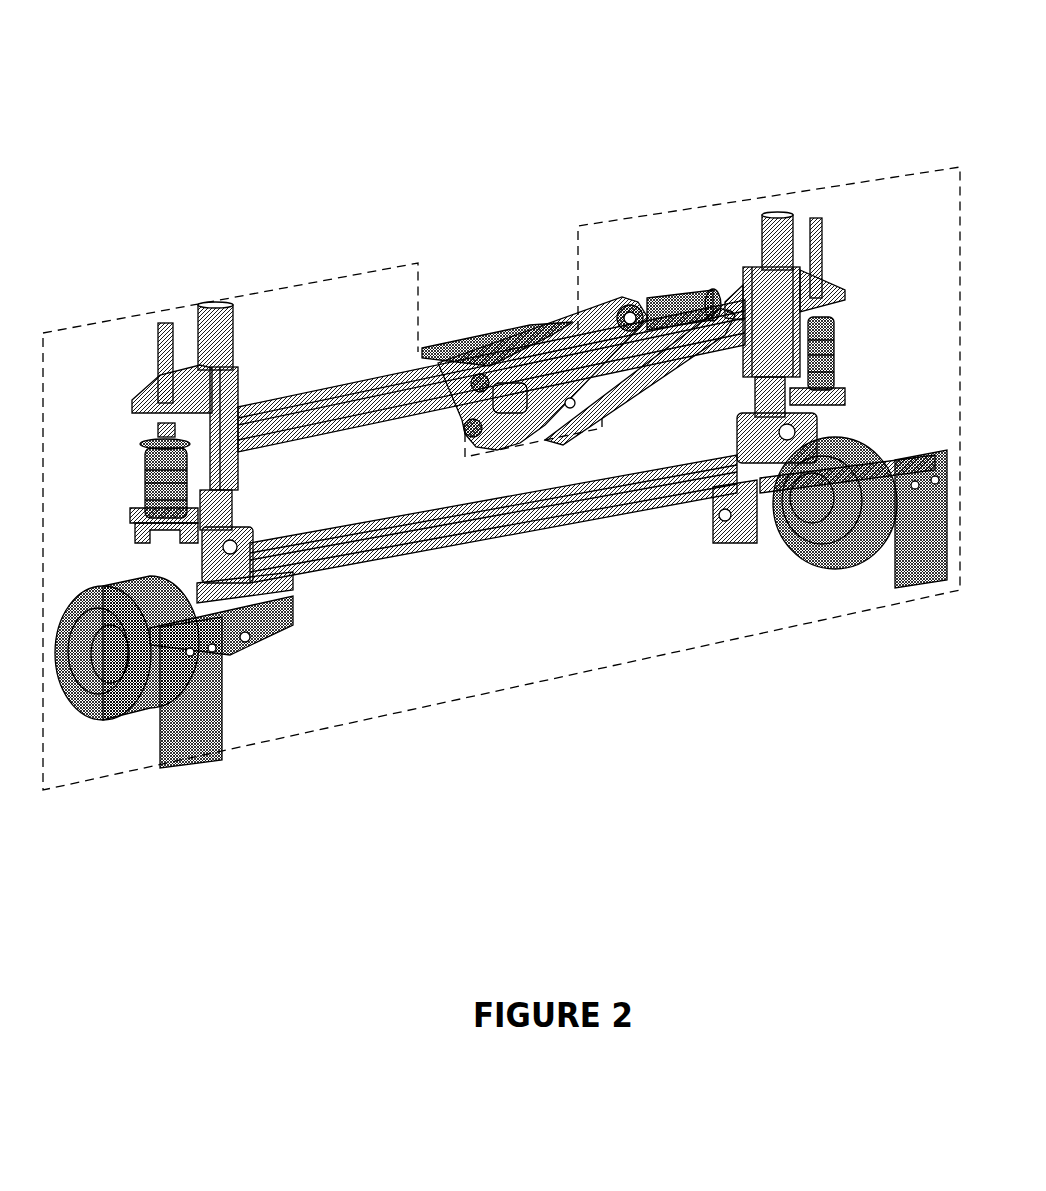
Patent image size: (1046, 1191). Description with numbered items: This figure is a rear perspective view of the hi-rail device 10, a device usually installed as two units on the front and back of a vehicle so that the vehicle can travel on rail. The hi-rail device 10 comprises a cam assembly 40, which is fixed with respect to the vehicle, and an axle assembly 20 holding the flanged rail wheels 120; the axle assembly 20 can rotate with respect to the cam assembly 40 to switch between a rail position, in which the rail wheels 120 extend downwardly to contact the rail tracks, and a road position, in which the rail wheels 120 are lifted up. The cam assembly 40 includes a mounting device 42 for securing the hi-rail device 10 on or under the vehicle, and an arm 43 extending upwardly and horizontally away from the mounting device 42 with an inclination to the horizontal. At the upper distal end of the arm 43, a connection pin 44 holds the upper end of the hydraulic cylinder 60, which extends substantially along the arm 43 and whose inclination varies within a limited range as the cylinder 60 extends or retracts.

The hi-rail device 10 is at (624, 80).
The axle assembly 20 is at (452, 706).
The cam assembly 40 is at (532, 314).
The mounting device 42 is at (457, 348).
The arm 43 is at (583, 377).
The connection pin 44 is at (666, 300).
The hydraulic cylinder 60 is at (623, 357).
The flanged rail wheels 120 is at (131, 712).